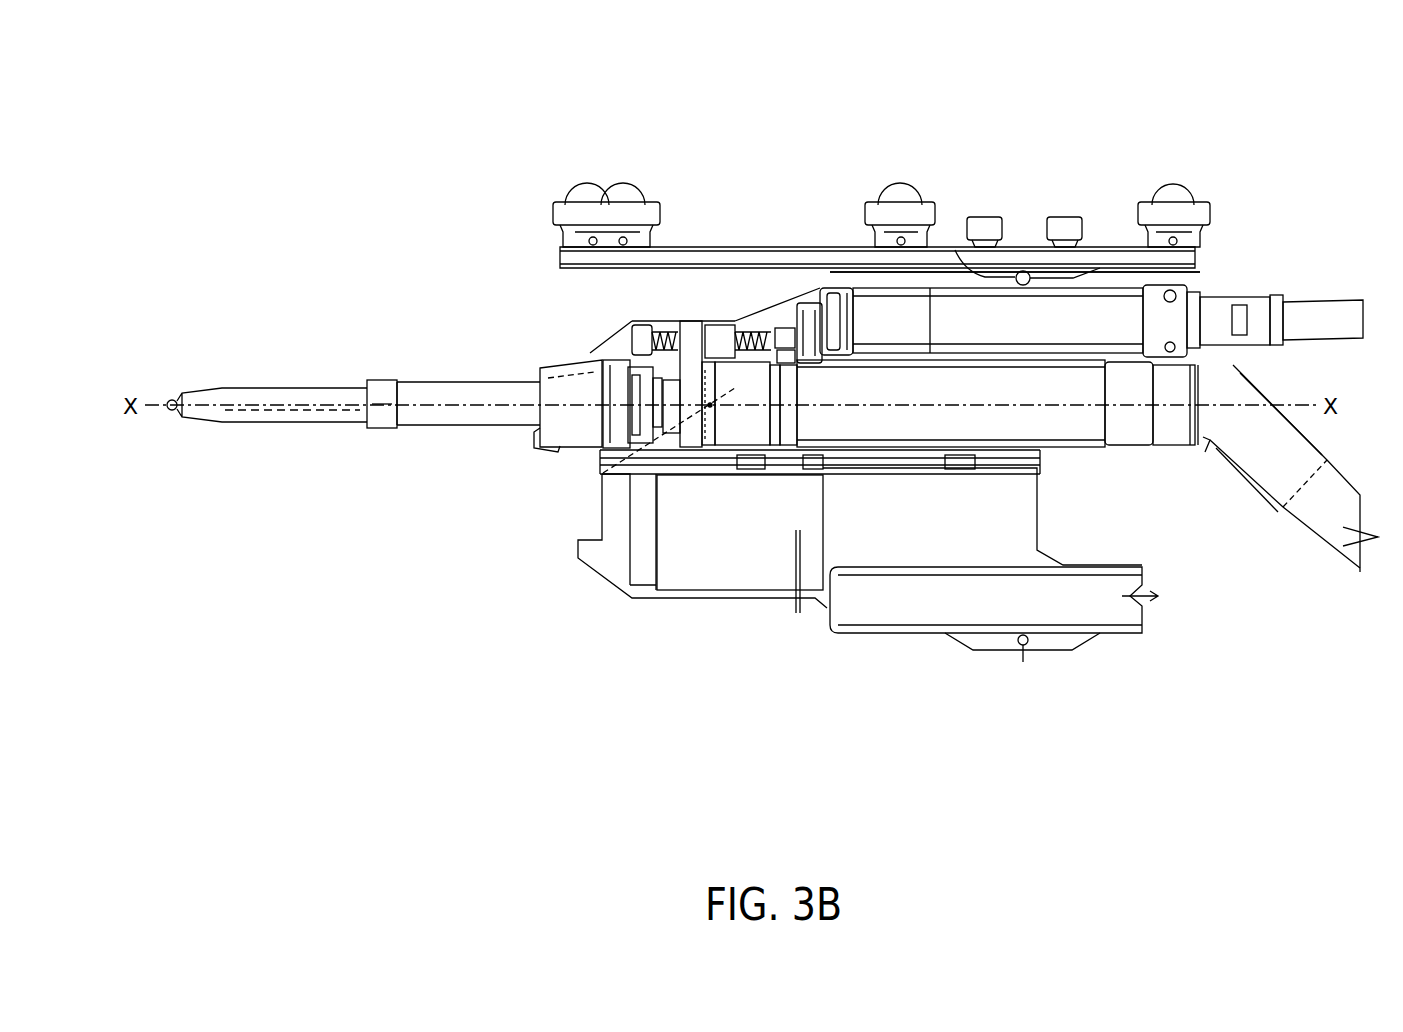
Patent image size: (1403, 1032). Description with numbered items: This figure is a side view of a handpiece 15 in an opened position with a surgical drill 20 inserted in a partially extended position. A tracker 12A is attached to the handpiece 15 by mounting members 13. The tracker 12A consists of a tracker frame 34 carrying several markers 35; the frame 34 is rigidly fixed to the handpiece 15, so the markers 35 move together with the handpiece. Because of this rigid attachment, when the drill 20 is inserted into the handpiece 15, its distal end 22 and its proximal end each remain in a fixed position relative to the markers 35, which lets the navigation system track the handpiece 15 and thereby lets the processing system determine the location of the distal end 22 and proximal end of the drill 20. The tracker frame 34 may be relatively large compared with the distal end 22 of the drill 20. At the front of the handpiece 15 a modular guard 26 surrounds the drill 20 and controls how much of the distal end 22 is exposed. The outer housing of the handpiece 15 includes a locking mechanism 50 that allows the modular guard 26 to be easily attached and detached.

The mounting members 13 is at (1064, 216).
The tracker 12A is at (1028, 212).
The tracker frame 34 is at (1112, 246).
The markers 35 is at (903, 180).
The handpiece 15 is at (521, 313).
The distal end 22 is at (172, 399).
The modular guard 26 is at (305, 400).
The locking mechanism 50 is at (540, 448).
The drill 20 is at (1085, 450).